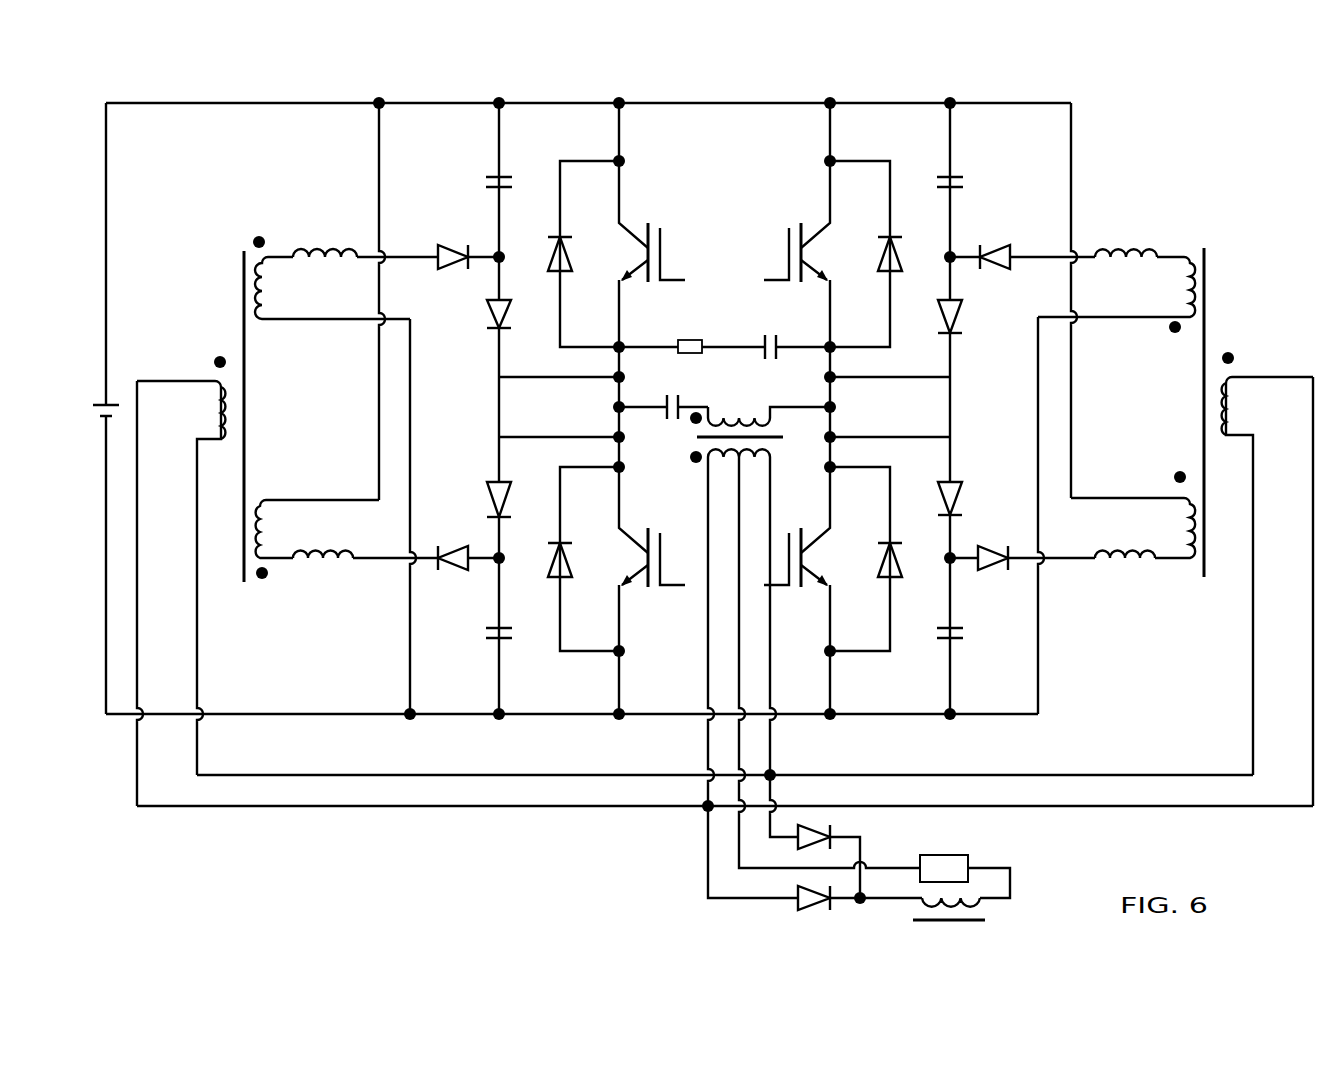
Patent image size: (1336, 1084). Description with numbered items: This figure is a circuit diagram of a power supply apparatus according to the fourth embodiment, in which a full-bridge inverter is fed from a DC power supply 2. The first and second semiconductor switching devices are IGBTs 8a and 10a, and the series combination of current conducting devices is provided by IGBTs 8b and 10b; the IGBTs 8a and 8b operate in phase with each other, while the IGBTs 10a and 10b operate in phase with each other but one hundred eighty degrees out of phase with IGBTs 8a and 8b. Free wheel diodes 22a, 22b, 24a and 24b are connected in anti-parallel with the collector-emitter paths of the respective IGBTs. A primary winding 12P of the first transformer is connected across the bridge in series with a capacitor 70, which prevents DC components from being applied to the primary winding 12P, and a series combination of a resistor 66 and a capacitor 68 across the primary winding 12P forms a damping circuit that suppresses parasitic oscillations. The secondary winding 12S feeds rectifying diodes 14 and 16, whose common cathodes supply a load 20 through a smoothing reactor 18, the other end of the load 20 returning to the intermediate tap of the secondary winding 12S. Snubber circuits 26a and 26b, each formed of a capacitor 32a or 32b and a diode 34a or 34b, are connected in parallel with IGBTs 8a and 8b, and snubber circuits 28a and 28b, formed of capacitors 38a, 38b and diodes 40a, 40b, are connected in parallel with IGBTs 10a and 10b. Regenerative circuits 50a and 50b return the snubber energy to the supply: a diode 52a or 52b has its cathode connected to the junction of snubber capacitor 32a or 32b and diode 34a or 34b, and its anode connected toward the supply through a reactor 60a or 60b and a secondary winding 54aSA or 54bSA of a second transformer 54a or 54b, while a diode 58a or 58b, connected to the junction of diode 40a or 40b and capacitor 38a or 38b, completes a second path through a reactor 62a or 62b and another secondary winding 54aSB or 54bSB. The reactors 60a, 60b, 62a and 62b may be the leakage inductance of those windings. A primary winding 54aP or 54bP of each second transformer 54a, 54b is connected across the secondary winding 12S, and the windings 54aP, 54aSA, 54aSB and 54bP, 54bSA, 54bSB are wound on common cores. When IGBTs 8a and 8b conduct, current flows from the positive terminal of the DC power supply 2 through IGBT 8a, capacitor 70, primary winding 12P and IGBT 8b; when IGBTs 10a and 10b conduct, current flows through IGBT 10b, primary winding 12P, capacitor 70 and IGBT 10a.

The DC power supply 2 is at (106, 402).
The IGBT 8a is at (646, 254).
The IGBT 8b is at (800, 559).
The IGBT 10a is at (642, 559).
The IGBT 10b is at (809, 254).
The primary winding 12P is at (745, 418).
The secondary winding 12S is at (750, 455).
The diode 14 is at (805, 905).
The diode 16 is at (820, 830).
The smoothing reactor 18 is at (975, 900).
The load 20 is at (945, 855).
The free wheel diode 22a is at (552, 245).
The free wheel diode 22b is at (893, 580).
The free wheel diode 24a is at (558, 580).
The free wheel diode 24b is at (895, 245).
The snubber circuit 26a is at (443, 303).
The snubber circuit 26b is at (996, 605).
The snubber circuit 28a is at (486, 608).
The snubber circuit 28b is at (1025, 307).
The capacitor 32a is at (495, 175).
The capacitor 32b is at (955, 628).
The diode 34a is at (490, 305).
The diode 34b is at (955, 487).
The capacitor 38a is at (490, 632).
The capacitor 38b is at (955, 175).
The diode 40a is at (495, 480).
The diode 40b is at (955, 310).
The regenerative circuit 50a is at (343, 421).
The regenerative circuit 50b is at (1138, 408).
The diode 52a is at (450, 245).
The diode 52b is at (990, 548).
The transformer 54a is at (258, 227).
The transformer 54b is at (1226, 243).
The primary winding 54aP is at (216, 412).
The secondary winding 54aSA is at (277, 300).
The secondary winding 54aSB is at (262, 500).
The primary winding 54bP is at (1225, 380).
The secondary winding 54bSA is at (1185, 280).
The secondary winding 54bSB is at (1183, 515).
The diode 58a is at (455, 548).
The diode 58b is at (1008, 250).
The reactor 60a is at (316, 250).
The reactor 60b is at (1128, 562).
The reactor 62a is at (330, 562).
The reactor 62b is at (1130, 247).
The resistor 66 is at (690, 340).
The capacitor 68 is at (772, 335).
The capacitor 70 is at (667, 415).